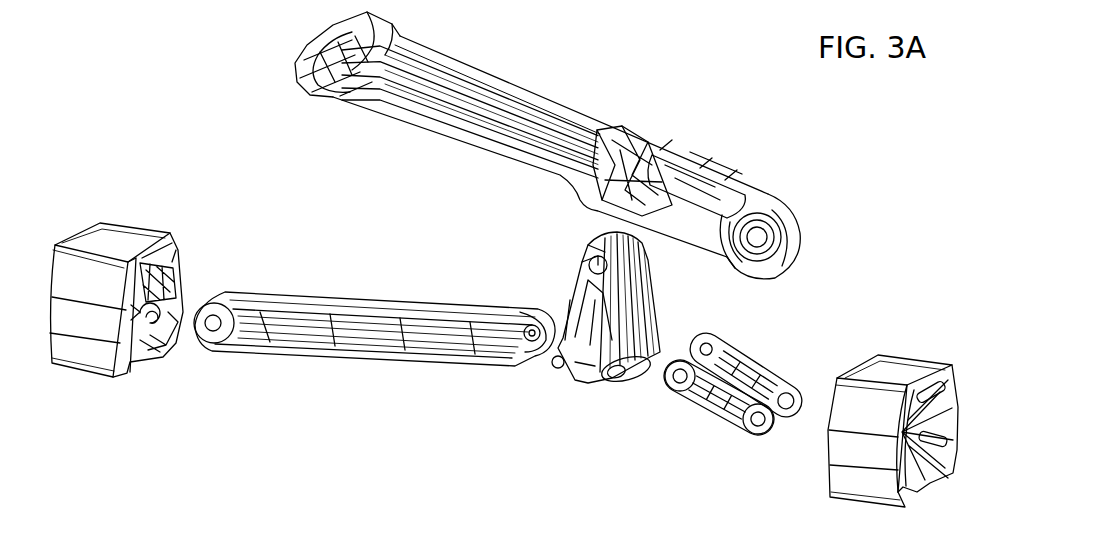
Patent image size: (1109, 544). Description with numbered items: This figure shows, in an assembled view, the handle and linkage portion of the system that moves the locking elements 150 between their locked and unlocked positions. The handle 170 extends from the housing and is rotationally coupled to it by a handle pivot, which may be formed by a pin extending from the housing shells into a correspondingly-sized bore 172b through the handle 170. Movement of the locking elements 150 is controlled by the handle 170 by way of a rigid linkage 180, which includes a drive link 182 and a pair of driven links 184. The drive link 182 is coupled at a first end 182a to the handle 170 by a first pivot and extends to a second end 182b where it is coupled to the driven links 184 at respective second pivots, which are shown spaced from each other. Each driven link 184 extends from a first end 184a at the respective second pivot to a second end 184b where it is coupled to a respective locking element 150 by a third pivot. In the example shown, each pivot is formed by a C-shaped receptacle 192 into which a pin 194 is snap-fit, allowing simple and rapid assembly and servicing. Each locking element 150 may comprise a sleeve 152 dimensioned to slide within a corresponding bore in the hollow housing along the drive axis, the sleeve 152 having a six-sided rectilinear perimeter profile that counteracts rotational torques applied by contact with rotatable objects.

The locking element 150 is at (110, 210).
The sleeve 152 is at (102, 360).
The handle 170 is at (567, 108).
The bore 172b is at (793, 217).
The rigid linkage 180 is at (507, 405).
The drive link 182 is at (573, 297).
The first end 182a is at (592, 243).
The second end 182b is at (657, 360).
The driven link 184 is at (357, 358).
The first end 184a is at (507, 363).
The second end 184b is at (240, 292).
The C-shaped receptacle 192 is at (555, 372).
The pin 194 is at (537, 348).